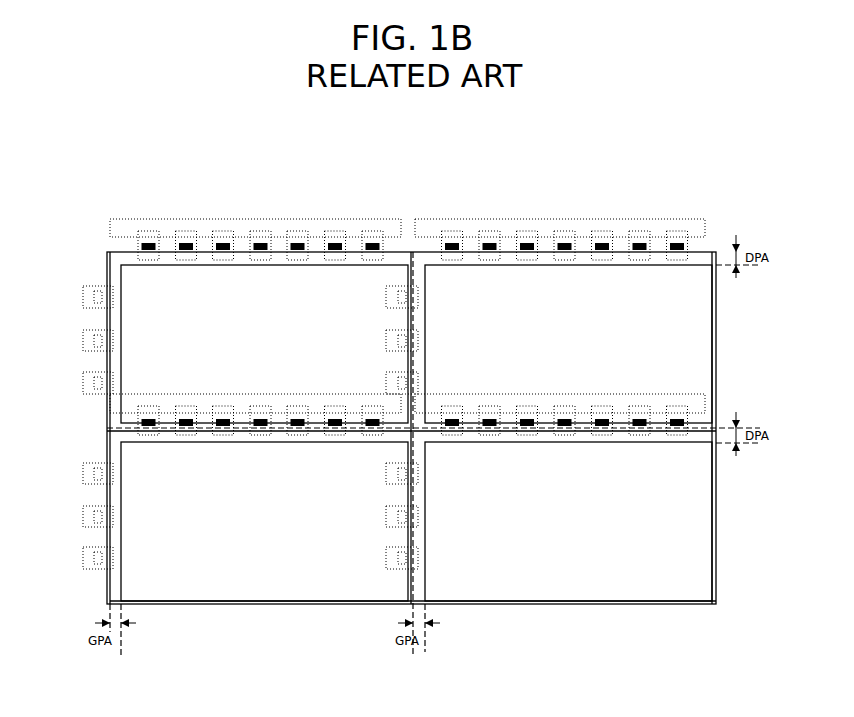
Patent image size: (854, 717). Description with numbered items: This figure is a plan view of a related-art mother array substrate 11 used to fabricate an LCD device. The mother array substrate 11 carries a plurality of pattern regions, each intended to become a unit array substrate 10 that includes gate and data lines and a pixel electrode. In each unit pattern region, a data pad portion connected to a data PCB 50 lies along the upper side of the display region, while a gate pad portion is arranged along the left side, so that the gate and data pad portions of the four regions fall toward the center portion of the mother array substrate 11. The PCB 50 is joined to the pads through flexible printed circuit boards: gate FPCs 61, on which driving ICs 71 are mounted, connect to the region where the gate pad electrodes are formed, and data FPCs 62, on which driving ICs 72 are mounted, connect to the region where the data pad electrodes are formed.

The array substrate 10 is at (103, 259).
The mother array substrate 11 is at (733, 165).
The PCB 50 is at (229, 224).
The gate FPC 61 is at (88, 297).
The data FPC 62 is at (148, 243).
The driving IC 71 is at (88, 338).
The driving IC 72 is at (186, 243).